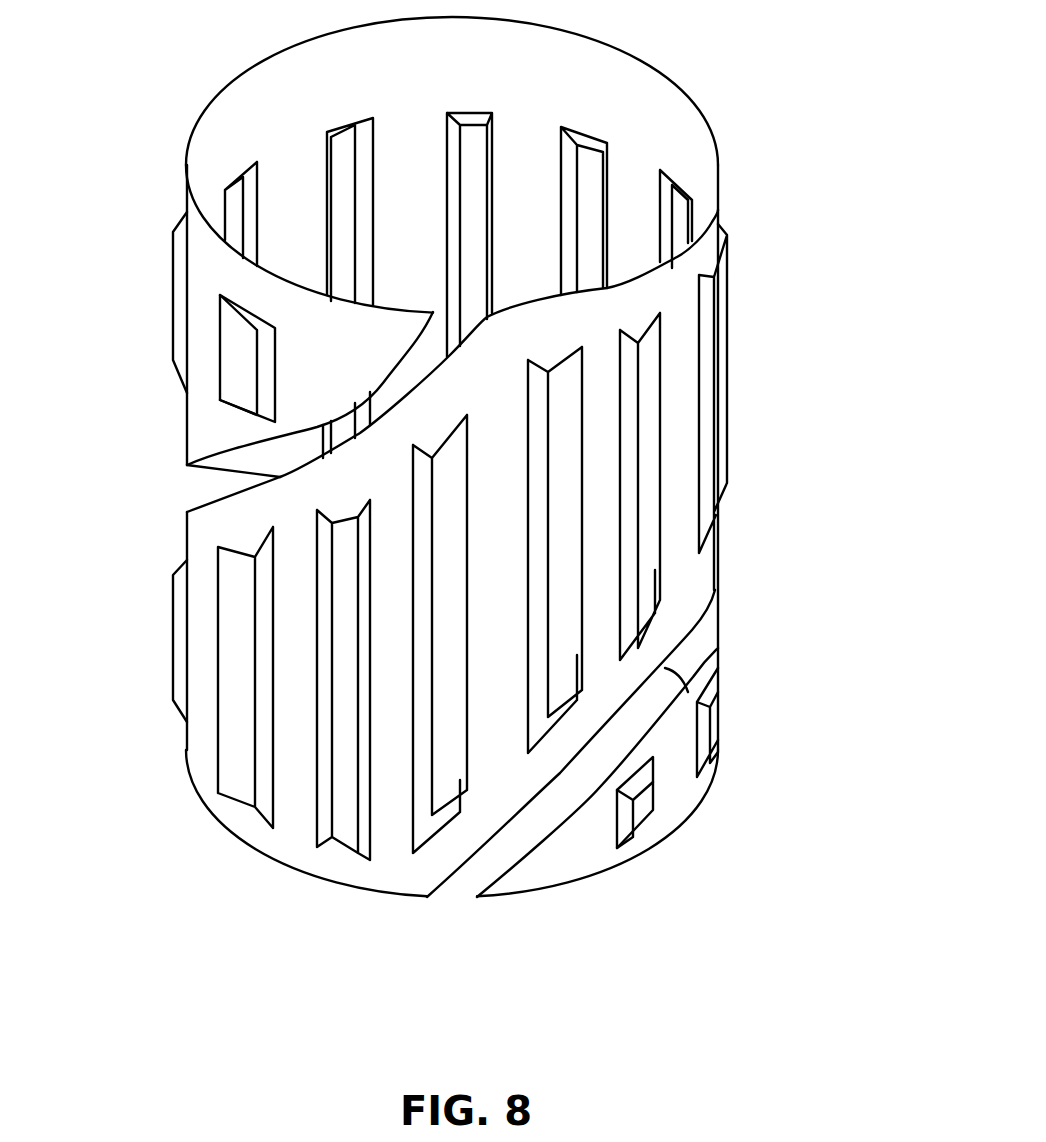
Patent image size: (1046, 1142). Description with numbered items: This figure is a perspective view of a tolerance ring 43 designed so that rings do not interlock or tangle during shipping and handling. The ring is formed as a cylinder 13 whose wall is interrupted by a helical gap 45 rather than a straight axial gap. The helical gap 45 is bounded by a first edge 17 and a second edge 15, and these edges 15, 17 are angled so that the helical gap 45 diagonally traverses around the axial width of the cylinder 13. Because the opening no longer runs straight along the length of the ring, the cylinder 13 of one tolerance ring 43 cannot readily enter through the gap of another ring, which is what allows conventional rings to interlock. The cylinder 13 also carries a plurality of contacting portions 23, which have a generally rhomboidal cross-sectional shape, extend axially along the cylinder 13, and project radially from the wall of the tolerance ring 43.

The tolerance ring 43 is at (469, 498).
The cylinder 13 is at (672, 277).
The second edge 15 is at (495, 581).
The first edge 17 is at (537, 867).
The contacting portions 23 is at (720, 358).
The helical gap 45 is at (208, 493).